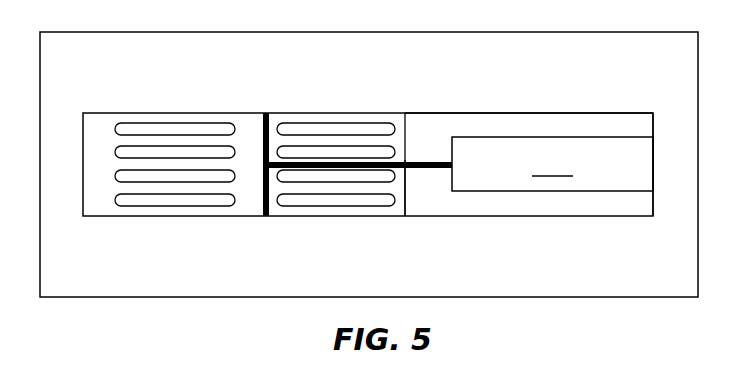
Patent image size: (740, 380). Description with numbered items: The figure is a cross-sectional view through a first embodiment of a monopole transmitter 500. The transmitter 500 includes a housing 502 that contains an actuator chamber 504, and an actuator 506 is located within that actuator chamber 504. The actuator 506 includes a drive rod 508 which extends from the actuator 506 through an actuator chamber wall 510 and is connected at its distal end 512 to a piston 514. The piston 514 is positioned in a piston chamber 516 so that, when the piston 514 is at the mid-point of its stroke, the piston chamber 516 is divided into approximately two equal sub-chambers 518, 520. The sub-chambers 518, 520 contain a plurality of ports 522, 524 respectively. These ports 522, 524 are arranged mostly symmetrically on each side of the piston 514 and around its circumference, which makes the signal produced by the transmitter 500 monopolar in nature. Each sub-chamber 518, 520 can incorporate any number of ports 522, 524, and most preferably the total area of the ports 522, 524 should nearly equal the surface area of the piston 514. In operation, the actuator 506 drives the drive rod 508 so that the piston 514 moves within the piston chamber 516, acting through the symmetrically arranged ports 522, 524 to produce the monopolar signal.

The monopole transmitter 500 is at (297, 92).
The housing 502 is at (529, 152).
The actuator chamber 504 is at (646, 148).
The actuator 506 is at (552, 164).
The drive rod 508 is at (384, 126).
The actuator chamber wall 510 is at (439, 201).
The distal end 512 is at (299, 204).
The piston 514 is at (233, 125).
The piston chamber 516 is at (175, 108).
The sub-chamber 518 is at (175, 221).
The sub-chamber 520 is at (337, 228).
The ports 522 is at (165, 164).
The ports 524 is at (347, 164).